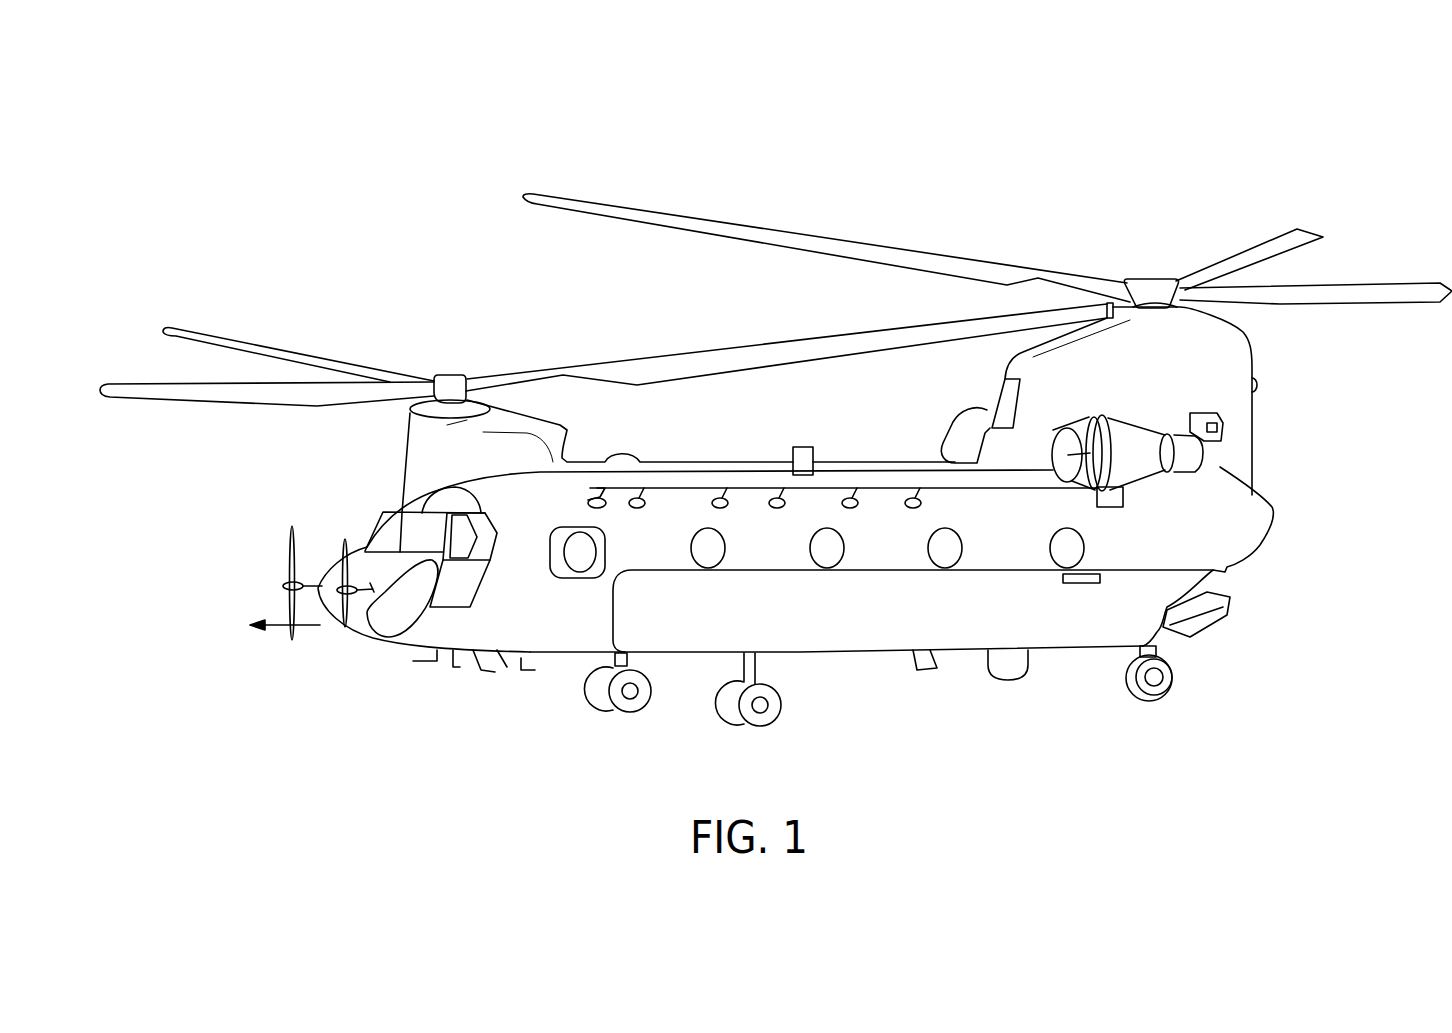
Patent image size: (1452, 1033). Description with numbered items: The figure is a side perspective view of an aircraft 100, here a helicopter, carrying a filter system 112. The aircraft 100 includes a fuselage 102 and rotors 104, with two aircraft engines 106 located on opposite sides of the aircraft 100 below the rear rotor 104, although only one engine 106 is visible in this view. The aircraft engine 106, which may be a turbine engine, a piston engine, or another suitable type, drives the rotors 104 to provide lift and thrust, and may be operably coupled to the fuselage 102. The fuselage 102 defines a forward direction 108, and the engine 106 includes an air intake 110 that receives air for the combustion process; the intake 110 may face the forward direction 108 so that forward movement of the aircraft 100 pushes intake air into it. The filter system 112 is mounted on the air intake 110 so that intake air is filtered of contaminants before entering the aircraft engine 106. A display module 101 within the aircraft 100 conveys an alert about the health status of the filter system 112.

The aircraft 100 is at (268, 90).
The display module 101 is at (403, 552).
The fuselage 102 is at (583, 613).
The rotors 104 is at (353, 362).
The aircraft engine 106 is at (1152, 447).
The forward direction 108 is at (300, 628).
The air intake 110 is at (1273, 512).
The filter system 112 is at (1062, 455).